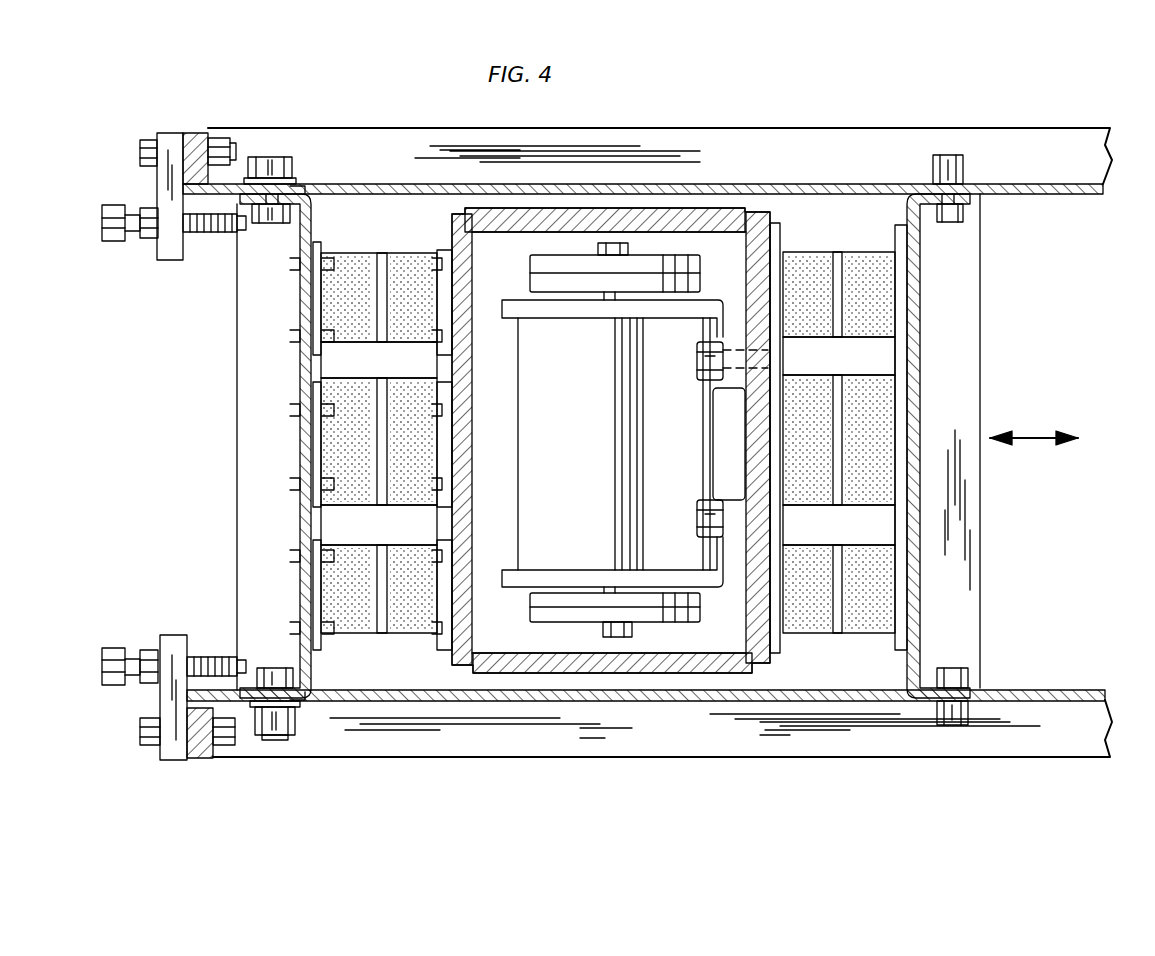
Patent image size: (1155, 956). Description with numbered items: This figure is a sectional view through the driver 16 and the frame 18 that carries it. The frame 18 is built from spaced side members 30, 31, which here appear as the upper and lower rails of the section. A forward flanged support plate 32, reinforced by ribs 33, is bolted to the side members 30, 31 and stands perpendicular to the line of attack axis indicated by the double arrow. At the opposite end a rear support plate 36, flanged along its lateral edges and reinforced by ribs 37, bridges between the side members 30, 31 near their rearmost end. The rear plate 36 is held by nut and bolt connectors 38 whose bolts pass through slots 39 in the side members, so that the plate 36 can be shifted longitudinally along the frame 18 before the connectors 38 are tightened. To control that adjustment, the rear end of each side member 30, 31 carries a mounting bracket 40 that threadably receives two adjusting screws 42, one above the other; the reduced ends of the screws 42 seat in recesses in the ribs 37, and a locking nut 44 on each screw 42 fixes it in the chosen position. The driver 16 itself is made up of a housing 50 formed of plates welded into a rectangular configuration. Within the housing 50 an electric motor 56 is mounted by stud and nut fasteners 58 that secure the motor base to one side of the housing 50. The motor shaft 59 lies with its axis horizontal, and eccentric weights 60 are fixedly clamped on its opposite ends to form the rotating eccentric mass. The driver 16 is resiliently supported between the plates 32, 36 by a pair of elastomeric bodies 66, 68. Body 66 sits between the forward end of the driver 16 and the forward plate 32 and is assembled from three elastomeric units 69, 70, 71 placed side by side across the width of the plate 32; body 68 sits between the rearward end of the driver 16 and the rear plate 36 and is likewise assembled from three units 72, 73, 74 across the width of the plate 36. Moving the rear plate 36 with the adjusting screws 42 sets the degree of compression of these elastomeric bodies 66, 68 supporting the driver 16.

The driver 16 is at (705, 212).
The frame 18 is at (1015, 158).
The side member 30 is at (1040, 194).
The side member 31 is at (1040, 690).
The forward flanged support plate 32 is at (922, 326).
The reinforcing ribs 33 is at (958, 522).
The rear support plate 36 is at (300, 235).
The ribs 37 is at (250, 395).
The nut and bolt connectors 38 is at (288, 167).
The slots 39 is at (296, 190).
The mounting bracket 40 is at (170, 185).
The adjusting screws 42 is at (200, 236).
The locking nut 44 is at (150, 240).
The housing 50 is at (652, 662).
The electric motor 56 is at (578, 439).
The stud and nut fasteners 58 is at (700, 505).
The motor shaft 59 is at (607, 297).
The weights 60 is at (690, 278).
The elastomeric body 66 is at (826, 250).
The elastomeric body 68 is at (395, 250).
The elastomeric unit 69 is at (873, 410).
The elastomeric unit 70 is at (875, 290).
The elastomeric unit 71 is at (880, 572).
The elastomeric unit 72 is at (338, 446).
The elastomeric unit 73 is at (337, 292).
The elastomeric unit 74 is at (340, 570).